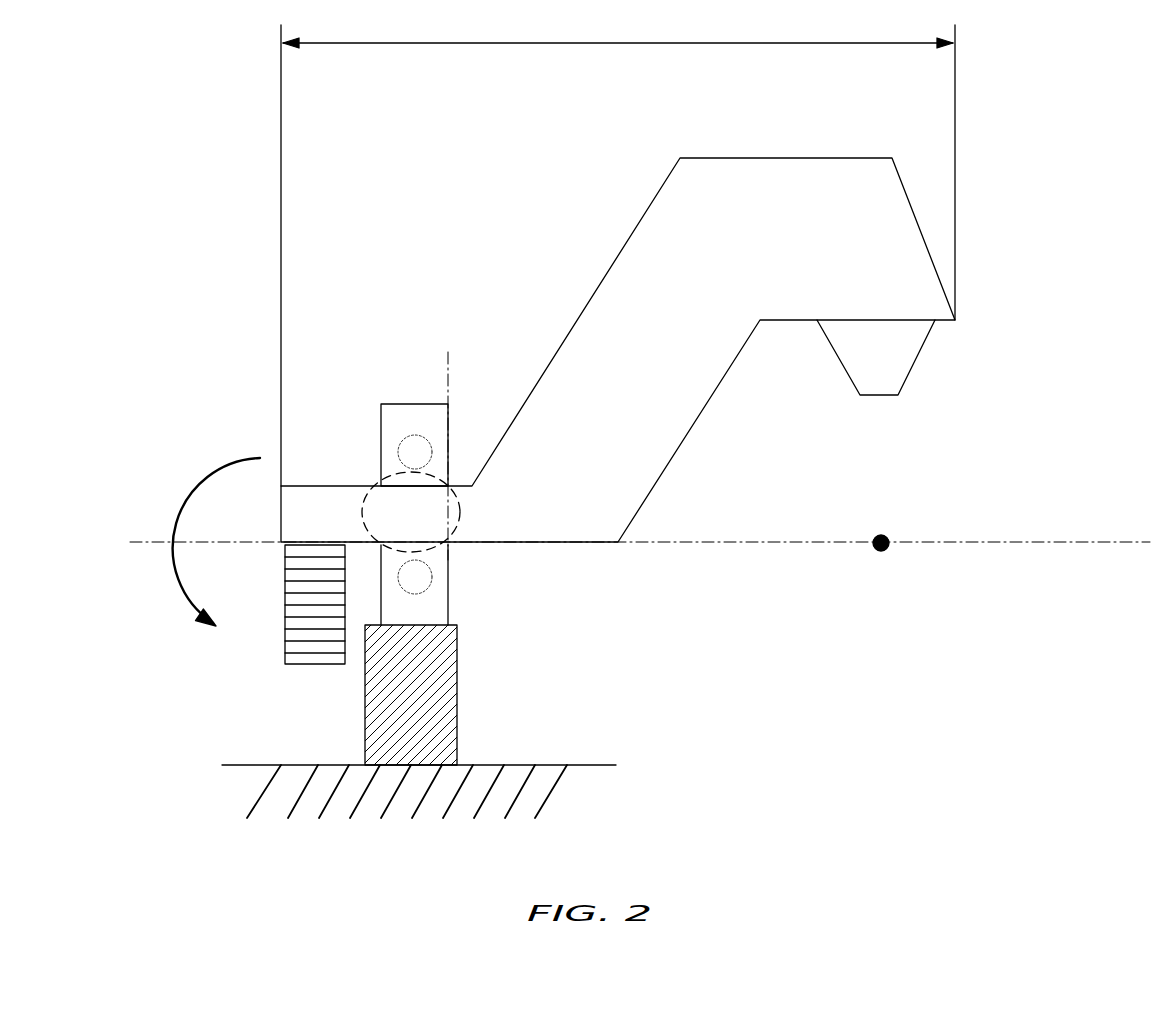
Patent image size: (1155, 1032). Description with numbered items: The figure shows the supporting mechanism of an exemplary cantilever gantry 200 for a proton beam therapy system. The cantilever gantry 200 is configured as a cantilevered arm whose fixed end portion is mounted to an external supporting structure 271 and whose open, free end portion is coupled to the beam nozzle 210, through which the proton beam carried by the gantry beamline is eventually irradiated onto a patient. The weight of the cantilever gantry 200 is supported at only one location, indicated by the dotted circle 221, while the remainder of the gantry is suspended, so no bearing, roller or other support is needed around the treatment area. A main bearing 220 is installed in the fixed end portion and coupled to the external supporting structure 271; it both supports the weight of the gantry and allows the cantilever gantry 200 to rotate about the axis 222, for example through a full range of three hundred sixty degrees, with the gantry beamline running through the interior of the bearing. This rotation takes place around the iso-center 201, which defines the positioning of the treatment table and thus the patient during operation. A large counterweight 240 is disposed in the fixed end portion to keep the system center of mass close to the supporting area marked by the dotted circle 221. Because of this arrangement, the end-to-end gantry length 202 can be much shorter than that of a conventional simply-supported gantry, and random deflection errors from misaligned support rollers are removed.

The cantilever gantry 200 is at (638, 220).
The iso-center 201 is at (885, 556).
The end-to-end gantry length 202 is at (601, 37).
The beam nozzle 210 is at (858, 396).
The main bearing 220 is at (450, 580).
The dotted circle 221 is at (363, 500).
The axis 222 is at (146, 546).
The counterweight 240 is at (290, 667).
The external supporting structure 271 is at (460, 673).